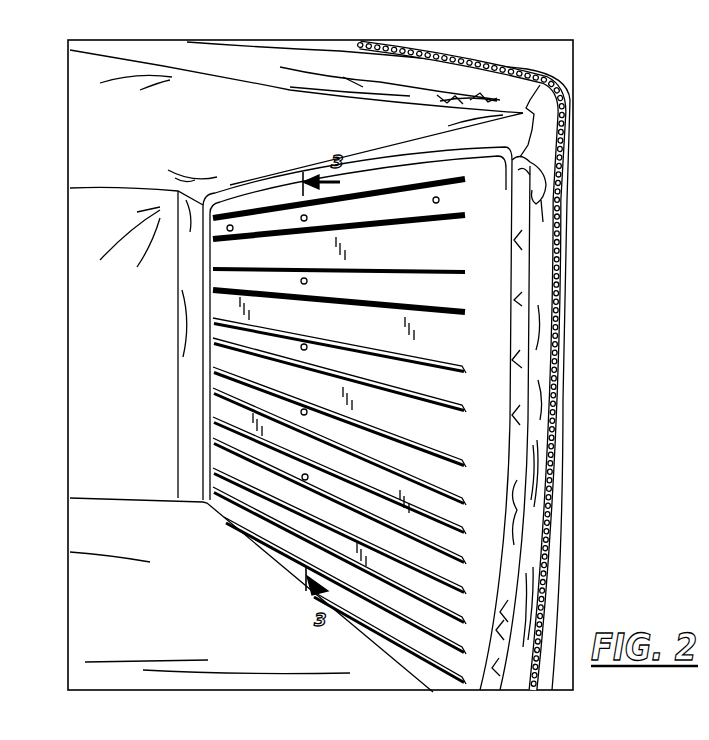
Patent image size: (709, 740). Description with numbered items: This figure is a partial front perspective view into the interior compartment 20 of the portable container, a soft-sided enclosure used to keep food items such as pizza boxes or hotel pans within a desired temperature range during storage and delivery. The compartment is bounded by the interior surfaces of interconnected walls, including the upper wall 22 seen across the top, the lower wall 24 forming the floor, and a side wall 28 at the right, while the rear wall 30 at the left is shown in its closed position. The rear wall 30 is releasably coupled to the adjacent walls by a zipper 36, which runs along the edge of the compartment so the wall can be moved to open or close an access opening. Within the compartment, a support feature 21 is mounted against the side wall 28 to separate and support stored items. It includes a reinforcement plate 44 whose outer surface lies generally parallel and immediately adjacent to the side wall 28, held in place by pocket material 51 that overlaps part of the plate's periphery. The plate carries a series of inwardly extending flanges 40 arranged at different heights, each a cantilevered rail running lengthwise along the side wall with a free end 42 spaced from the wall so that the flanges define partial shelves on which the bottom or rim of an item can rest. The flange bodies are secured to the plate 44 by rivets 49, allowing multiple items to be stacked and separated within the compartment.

The interior compartment 20 is at (270, 690).
The support feature 21 is at (495, 240).
The upper wall 22 is at (252, 134).
The lower wall 24 is at (148, 634).
The side wall 28 is at (540, 310).
The rear wall 30 is at (137, 364).
The zipper 36 is at (557, 253).
The flange 40 is at (429, 463).
The free end 42 is at (442, 274).
The reinforcement plate 44 is at (488, 337).
The rivet 49 is at (441, 198).
The pocket material 51 is at (520, 291).